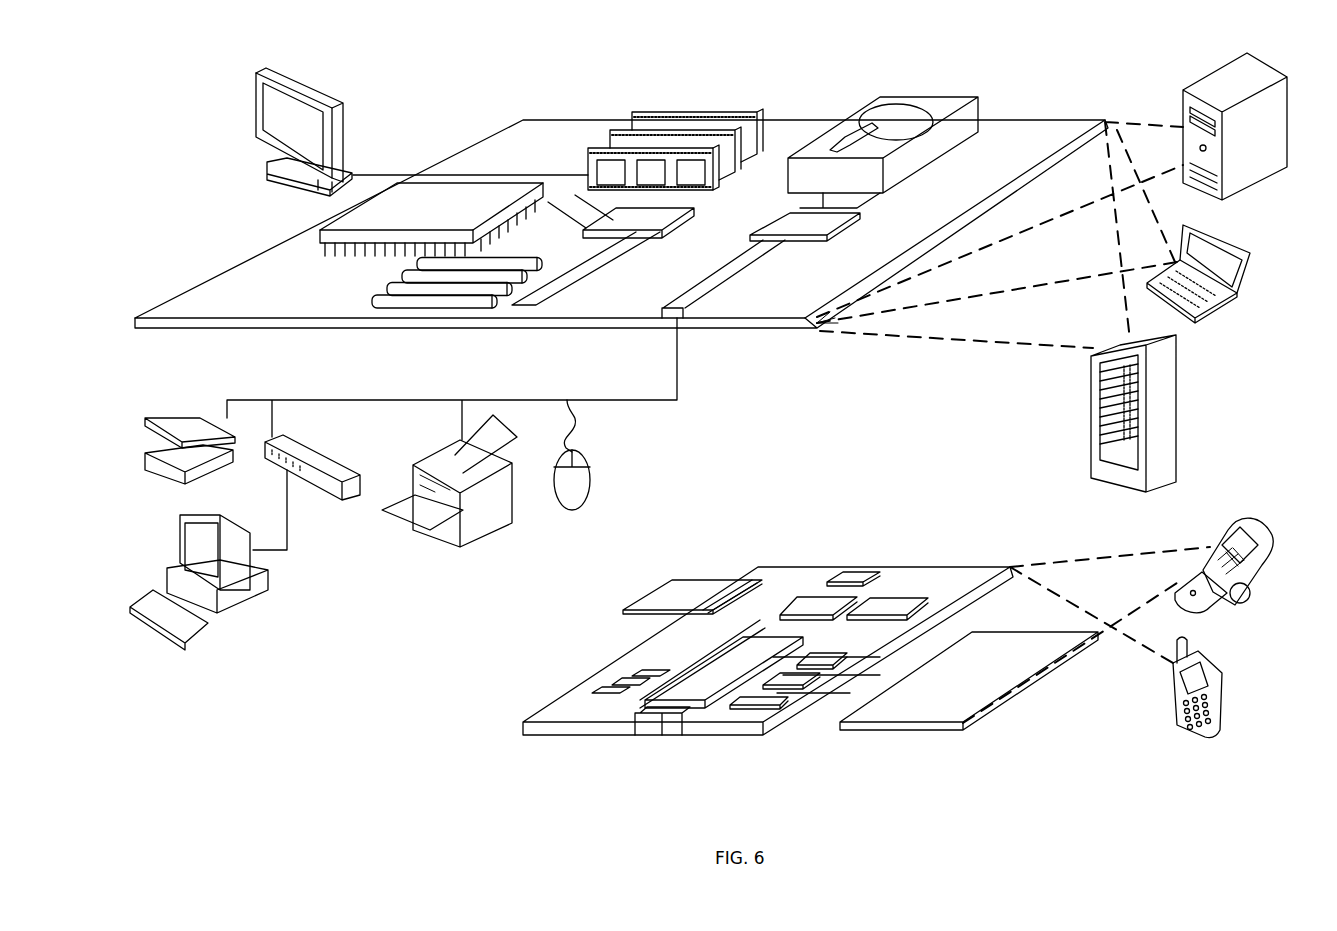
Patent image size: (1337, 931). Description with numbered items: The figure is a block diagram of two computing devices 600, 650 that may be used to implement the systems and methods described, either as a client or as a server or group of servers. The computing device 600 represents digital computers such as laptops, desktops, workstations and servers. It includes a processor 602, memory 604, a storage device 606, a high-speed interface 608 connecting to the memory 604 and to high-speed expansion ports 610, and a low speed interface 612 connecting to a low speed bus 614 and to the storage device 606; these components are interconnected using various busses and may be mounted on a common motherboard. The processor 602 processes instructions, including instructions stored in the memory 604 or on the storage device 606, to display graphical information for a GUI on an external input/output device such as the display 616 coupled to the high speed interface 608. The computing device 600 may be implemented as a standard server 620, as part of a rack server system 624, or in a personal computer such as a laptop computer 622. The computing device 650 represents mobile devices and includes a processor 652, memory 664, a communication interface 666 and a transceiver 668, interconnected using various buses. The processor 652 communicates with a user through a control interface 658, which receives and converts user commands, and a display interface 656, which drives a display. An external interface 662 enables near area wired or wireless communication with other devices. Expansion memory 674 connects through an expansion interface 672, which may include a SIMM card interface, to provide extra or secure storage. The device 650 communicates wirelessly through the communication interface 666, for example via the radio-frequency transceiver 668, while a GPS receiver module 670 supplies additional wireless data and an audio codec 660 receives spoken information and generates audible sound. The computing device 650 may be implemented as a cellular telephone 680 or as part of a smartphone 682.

The computing device 600 is at (443, 92).
The processor 602 is at (327, 237).
The memory 604 is at (648, 112).
The storage device 606 is at (870, 98).
The high-speed interface 608 is at (615, 217).
The high-speed expansion ports 610 is at (387, 289).
The low speed interface 612 is at (787, 223).
The low speed bus 614 is at (688, 318).
The display 616 is at (258, 70).
The standard server 620 is at (1183, 106).
The laptop computer 622 is at (1248, 250).
The rack server system 624 is at (1092, 437).
The computing device 650 is at (503, 731).
The processor 652 is at (700, 703).
The display interface 656 is at (805, 707).
The control interface 658 is at (810, 690).
The audio codec 660 is at (820, 658).
The external interface 662 is at (663, 735).
The memory 664 is at (600, 678).
The communication interface 666 is at (813, 602).
The transceiver 668 is at (890, 600).
The GPS receiver module 670 is at (857, 578).
The expansion interface 672 is at (734, 583).
The expansion memory 674 is at (672, 580).
The cellular telephone 680 is at (1228, 523).
The smartphone 682 is at (1167, 697).